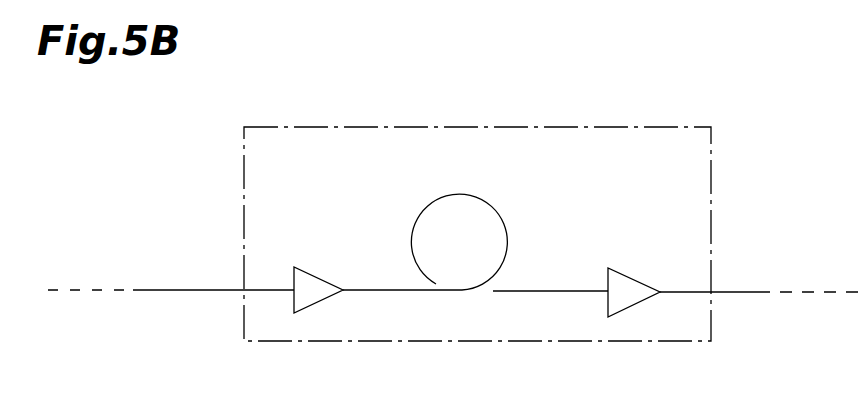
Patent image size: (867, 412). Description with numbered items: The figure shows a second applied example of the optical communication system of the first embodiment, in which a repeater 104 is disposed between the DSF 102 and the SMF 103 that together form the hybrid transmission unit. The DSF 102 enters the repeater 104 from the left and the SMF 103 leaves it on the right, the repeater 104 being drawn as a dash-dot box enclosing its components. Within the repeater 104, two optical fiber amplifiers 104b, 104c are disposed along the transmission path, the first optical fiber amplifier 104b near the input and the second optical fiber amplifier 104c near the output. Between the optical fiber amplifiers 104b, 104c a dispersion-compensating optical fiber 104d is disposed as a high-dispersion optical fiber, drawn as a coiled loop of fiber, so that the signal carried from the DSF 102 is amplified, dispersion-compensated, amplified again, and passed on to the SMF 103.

The repeater 104 is at (637, 128).
The DSF 102 is at (157, 289).
The SMF 103 is at (755, 292).
The optical fiber amplifier 104b is at (315, 272).
The optical fiber amplifier 104c is at (630, 277).
The fiber loop (dispersion compensating fiber) 104d is at (485, 197).